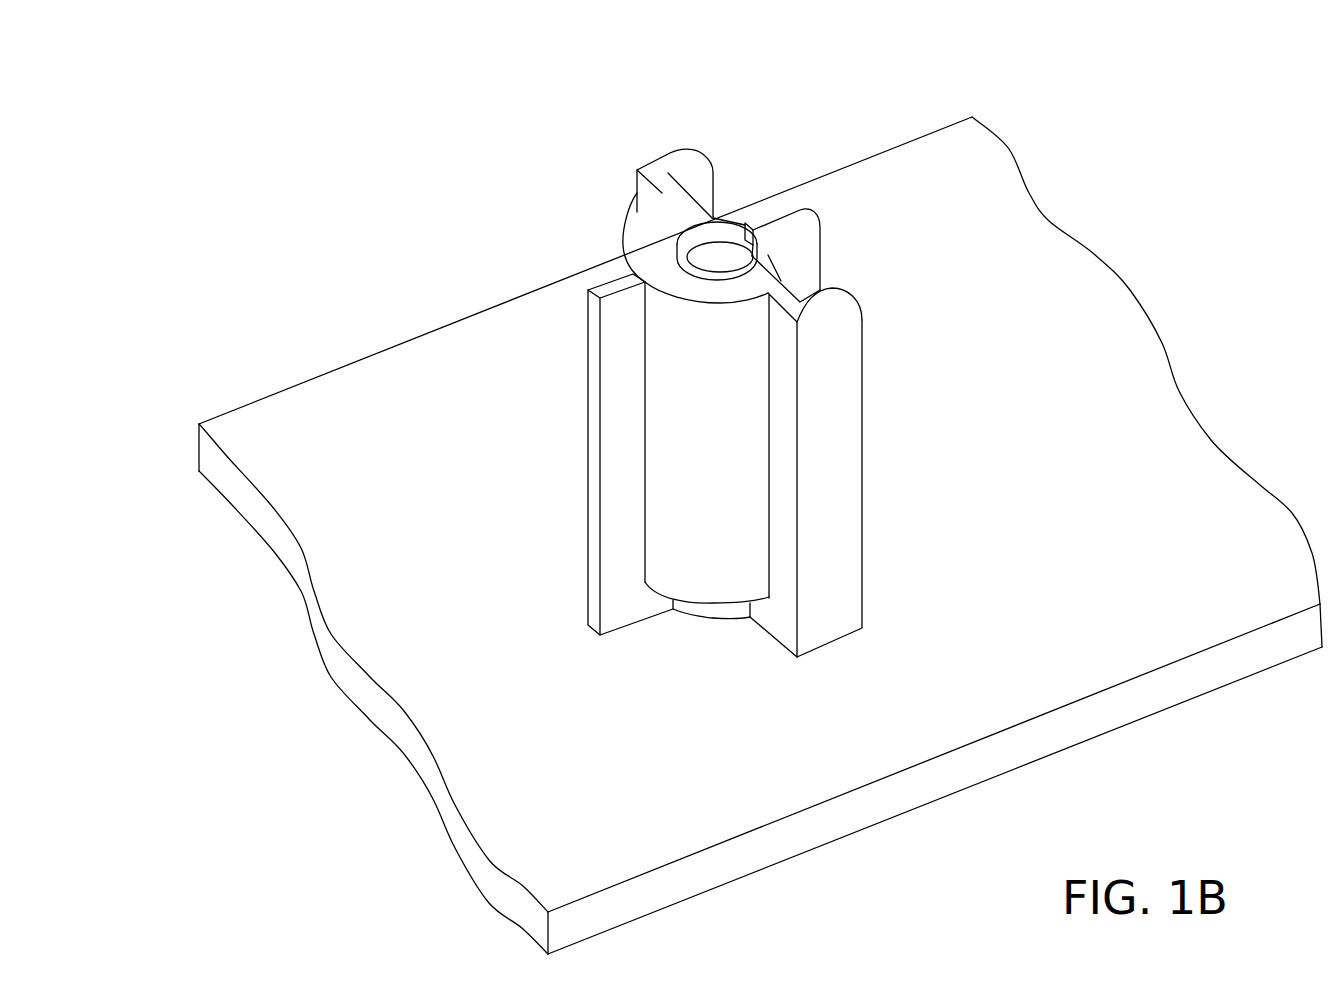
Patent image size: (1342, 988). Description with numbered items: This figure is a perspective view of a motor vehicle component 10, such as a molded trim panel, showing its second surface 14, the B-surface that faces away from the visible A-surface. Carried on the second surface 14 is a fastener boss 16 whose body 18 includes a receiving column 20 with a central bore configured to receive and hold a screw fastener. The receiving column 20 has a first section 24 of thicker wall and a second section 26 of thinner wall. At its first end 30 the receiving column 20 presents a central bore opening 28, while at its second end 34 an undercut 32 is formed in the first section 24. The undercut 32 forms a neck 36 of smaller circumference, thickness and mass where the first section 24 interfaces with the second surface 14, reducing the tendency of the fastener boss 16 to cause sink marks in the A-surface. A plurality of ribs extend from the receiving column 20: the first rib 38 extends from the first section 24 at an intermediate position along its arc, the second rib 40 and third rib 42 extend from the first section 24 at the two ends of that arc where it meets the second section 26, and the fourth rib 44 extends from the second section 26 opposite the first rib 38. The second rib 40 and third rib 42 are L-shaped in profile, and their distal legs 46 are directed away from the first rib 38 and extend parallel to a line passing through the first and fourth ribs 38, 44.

The motor vehicle component 10 is at (1138, 211).
The second surface 14 is at (1134, 410).
The fastener boss 16 is at (742, 168).
The body 18 is at (626, 261).
The receiving column 20 is at (673, 683).
The first section 24 is at (697, 288).
The second section 26 is at (735, 230).
The central bore opening 28 is at (678, 243).
The first end 30 is at (660, 212).
The undercut 32 is at (730, 632).
The second end 34 is at (735, 617).
The neck 36 is at (688, 612).
The first rib 38 is at (623, 462).
The second rib 40 is at (783, 565).
The third rib 42 is at (650, 172).
The fourth rib 44 is at (810, 244).
The distal legs 46 is at (843, 468).